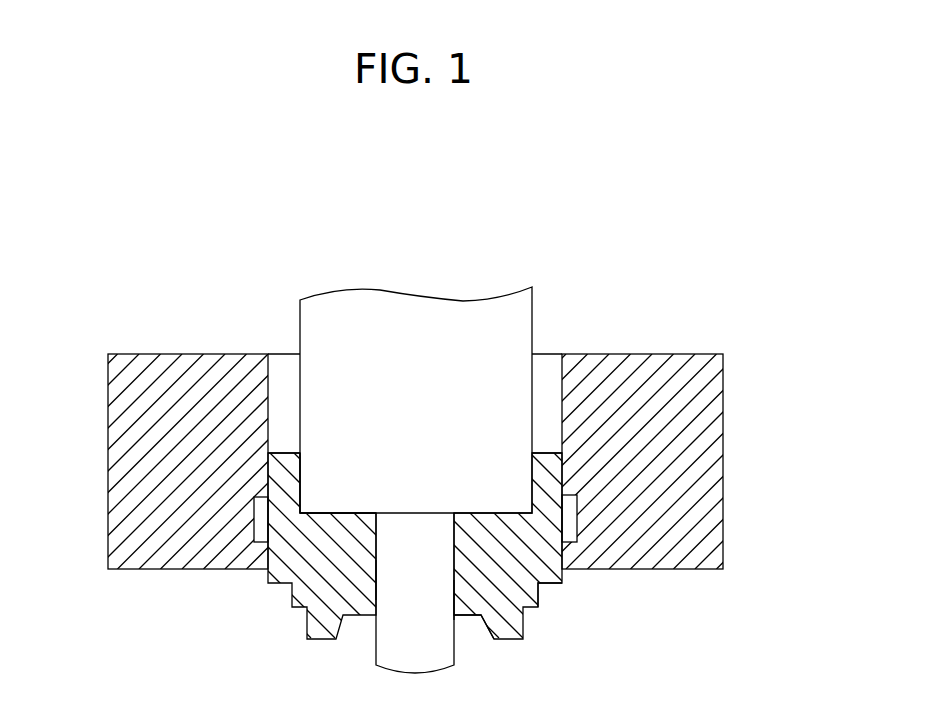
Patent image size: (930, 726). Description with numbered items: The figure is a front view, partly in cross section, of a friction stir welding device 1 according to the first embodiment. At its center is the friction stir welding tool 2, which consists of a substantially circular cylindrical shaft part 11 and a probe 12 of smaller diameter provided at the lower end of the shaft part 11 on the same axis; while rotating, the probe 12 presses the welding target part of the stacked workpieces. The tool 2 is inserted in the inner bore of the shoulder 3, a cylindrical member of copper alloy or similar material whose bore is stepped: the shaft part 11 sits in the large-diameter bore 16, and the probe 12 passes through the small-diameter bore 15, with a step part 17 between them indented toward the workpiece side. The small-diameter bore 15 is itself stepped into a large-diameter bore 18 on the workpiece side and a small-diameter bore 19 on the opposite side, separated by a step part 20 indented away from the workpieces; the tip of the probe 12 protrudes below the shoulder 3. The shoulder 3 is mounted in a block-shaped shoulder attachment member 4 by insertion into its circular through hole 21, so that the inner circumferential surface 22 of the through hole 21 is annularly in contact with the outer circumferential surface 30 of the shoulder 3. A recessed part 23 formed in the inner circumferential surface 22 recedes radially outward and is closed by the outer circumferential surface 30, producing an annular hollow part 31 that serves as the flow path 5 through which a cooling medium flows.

The friction stir welding device 1 is at (586, 176).
The friction stir welding tool 2 is at (481, 402).
The shoulder 3 is at (512, 572).
The shoulder attachment member 4 is at (705, 452).
The flow path 5 is at (242, 569).
The hollow part 31 is at (258, 538).
The shaft part 11 is at (507, 317).
The probe 12 is at (423, 540).
The small-diameter bore 15 is at (382, 564).
The large-diameter bore 16 is at (302, 467).
The step part 17 is at (350, 512).
The large-diameter bore 18 is at (340, 627).
The small-diameter bore 19 is at (454, 592).
The step part 20 is at (480, 618).
The through hole 21 is at (283, 370).
The inner circumferential surface 22 is at (568, 384).
The recessed part 23 is at (577, 512).
The outer circumferential surface 30 is at (563, 552).